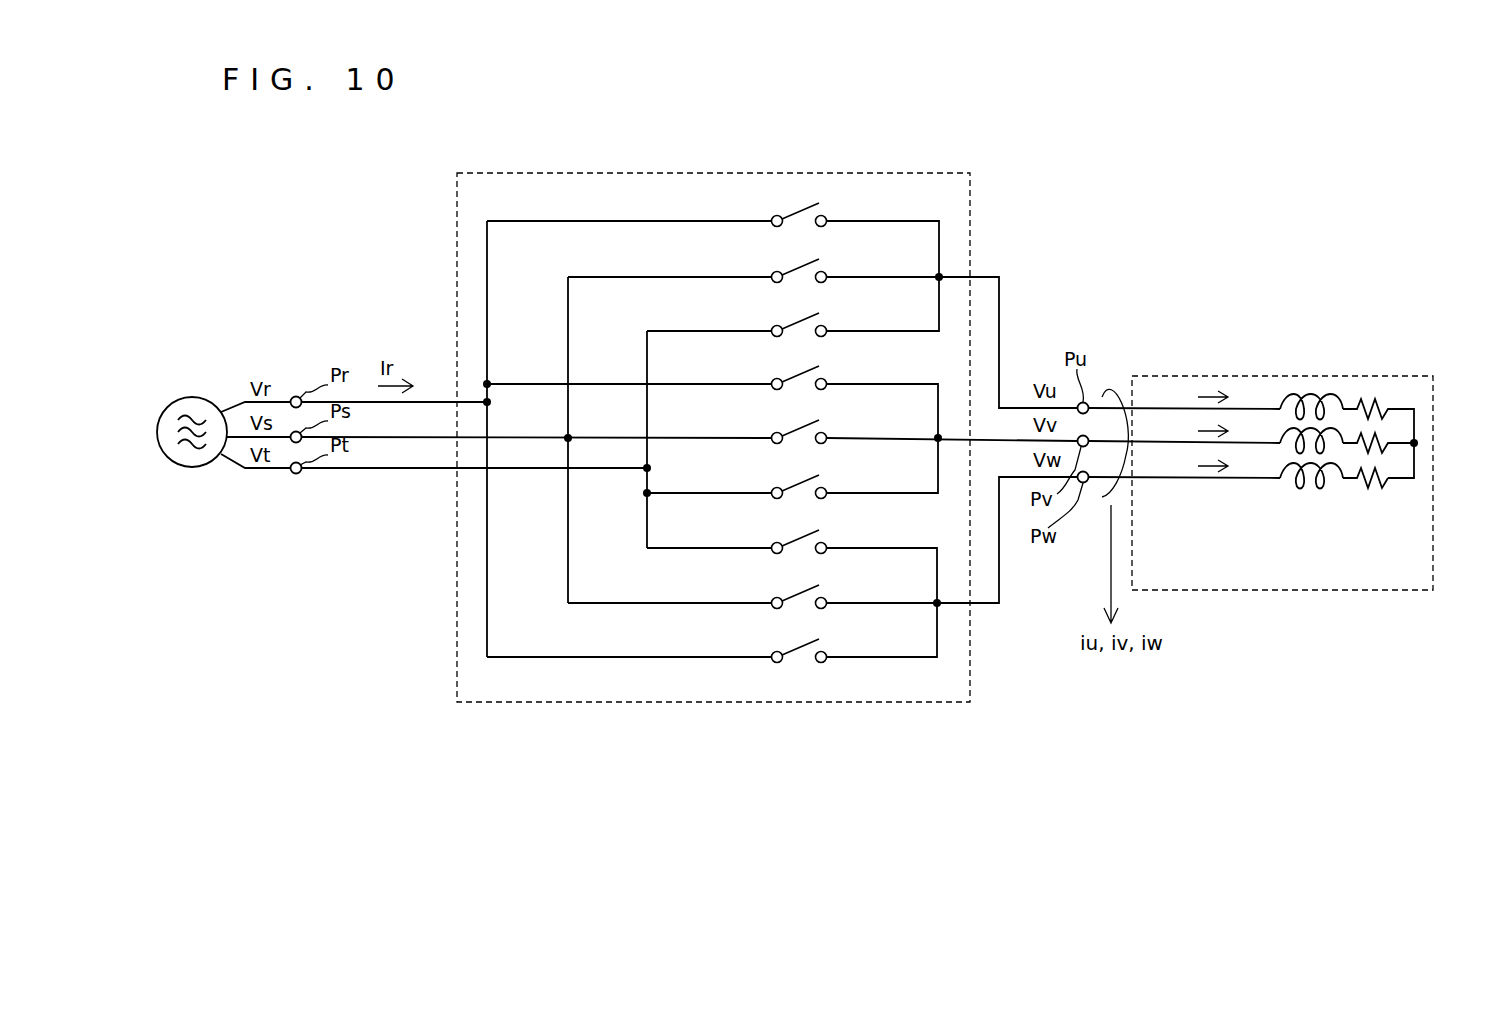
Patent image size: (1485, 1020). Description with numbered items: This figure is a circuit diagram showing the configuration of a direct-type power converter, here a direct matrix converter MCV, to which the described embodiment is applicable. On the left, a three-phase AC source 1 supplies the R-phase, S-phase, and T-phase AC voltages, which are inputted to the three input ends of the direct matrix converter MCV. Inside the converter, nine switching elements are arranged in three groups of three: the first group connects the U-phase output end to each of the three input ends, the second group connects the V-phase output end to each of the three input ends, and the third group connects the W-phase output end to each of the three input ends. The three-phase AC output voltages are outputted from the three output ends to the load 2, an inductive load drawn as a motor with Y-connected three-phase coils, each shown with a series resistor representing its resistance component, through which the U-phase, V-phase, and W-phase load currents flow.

The three-phase AC power source 1 is at (191, 397).
The load 2 is at (1340, 376).
The direct matrix converter MCV is at (912, 173).